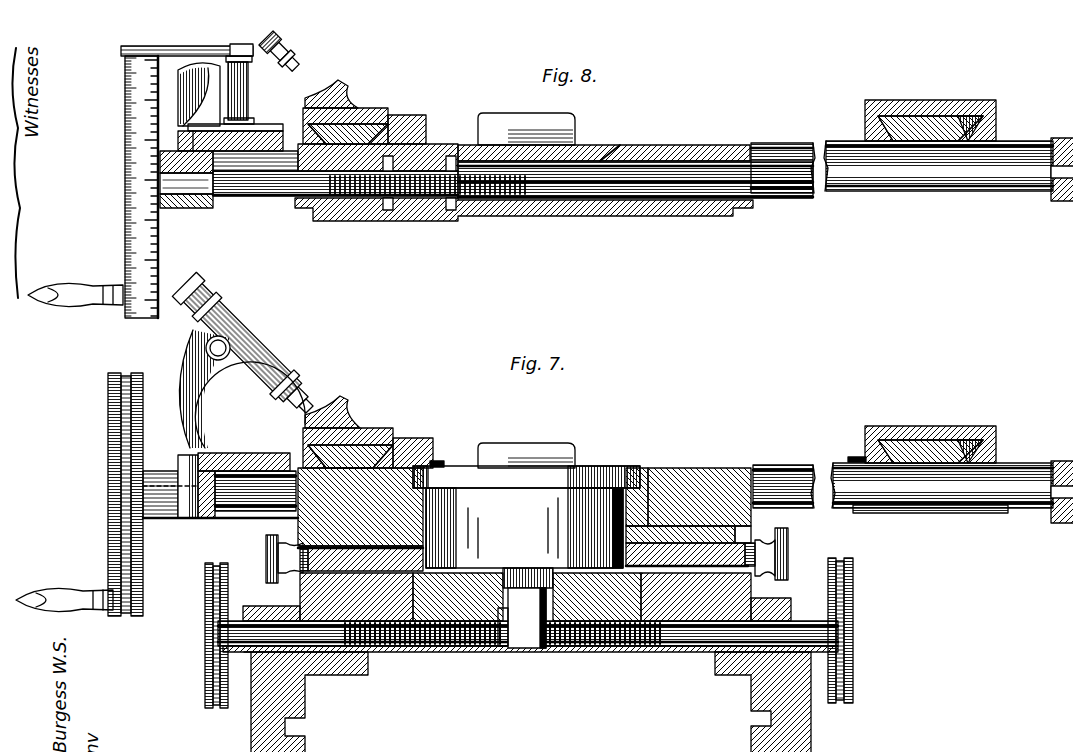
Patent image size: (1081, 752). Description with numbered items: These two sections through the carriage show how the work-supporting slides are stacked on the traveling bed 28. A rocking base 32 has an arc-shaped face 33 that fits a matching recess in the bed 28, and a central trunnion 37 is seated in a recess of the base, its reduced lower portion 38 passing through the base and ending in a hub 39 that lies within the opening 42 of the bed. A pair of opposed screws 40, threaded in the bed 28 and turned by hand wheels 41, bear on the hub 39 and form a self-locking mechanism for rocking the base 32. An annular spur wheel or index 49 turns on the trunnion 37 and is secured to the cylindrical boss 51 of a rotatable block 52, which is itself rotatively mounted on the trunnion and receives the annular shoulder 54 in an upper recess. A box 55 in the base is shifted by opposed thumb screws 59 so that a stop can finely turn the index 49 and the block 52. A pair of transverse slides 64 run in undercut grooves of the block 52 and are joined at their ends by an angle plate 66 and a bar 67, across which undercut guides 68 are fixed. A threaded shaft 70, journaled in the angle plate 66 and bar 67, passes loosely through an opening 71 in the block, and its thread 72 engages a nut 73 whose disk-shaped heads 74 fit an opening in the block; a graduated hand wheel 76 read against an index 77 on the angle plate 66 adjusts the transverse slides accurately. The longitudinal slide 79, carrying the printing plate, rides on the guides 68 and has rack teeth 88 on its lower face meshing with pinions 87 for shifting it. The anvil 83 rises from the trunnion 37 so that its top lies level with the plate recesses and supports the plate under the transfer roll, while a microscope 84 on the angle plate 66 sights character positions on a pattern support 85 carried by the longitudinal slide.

In FIG. 7, the traveling bed 28 is at (785, 685).
In FIG. 7, the rocking base 32 is at (612, 640).
In FIG. 7, the arc-shaped face 33 is at (575, 600).
In FIG. 7, the central trunnion 37 is at (573, 497).
In FIG. 7, the reduced lower portion 38 is at (508, 643).
In FIG. 7, the hub 39 is at (515, 592).
In FIG. 7, the opposed screws 40 is at (355, 640).
In FIG. 7, the hand wheels 41 is at (205, 605).
In FIG. 7, the opening in traveling bed 42 is at (498, 645).
In FIG. 7, the annular spur wheel or index 49 is at (775, 540).
In FIG. 8, the cylindrical boss 51 is at (725, 202).
In FIG. 7, the cylindrical boss 51 is at (745, 520).
In FIG. 8, the rotatable block 52 is at (690, 138).
In FIG. 7, the rotatable block 52 is at (700, 460).
In FIG. 7, the annular shoulder 54 is at (580, 460).
In FIG. 7, the box 55 is at (640, 460).
In FIG. 7, the thumb screws 59 is at (258, 545).
In FIG. 8, the transverse slides 64 is at (765, 136).
In FIG. 7, the transverse slides 64 is at (233, 462).
In FIG. 8, the angle plate 66 is at (200, 201).
In FIG. 7, the angle plate 66 is at (207, 445).
In FIG. 8, the bar 67 is at (1040, 190).
In FIG. 7, the bar 67 is at (1045, 515).
In FIG. 8, the undercut guides 68 is at (355, 112).
In FIG. 7, the undercut guides 68 is at (343, 440).
In FIG. 8, the threaded shaft 70 is at (255, 188).
In FIG. 8, the opening 71 is at (605, 140).
In FIG. 8, the thread 72 is at (432, 205).
In FIG. 8, the nut 73 is at (427, 147).
In FIG. 8, the disk-shaped heads 74 is at (444, 147).
In FIG. 8, the graduated hand wheel 76 is at (128, 186).
In FIG. 8, the index 77 is at (118, 40).
In FIG. 8, the longitudinal slide 79 is at (955, 105).
In FIG. 7, the longitudinal slide 79 is at (957, 430).
In FIG. 8, the anvil 83 is at (522, 117).
In FIG. 7, the anvil 83 is at (505, 435).
In FIG. 8, the microscope 84 is at (278, 32).
In FIG. 7, the microscope 84 is at (230, 322).
In FIG. 7, the pattern support 85 is at (332, 390).
In FIG. 7, the pinions 87 is at (912, 503).
In FIG. 7, the rack teeth 88 is at (430, 452).